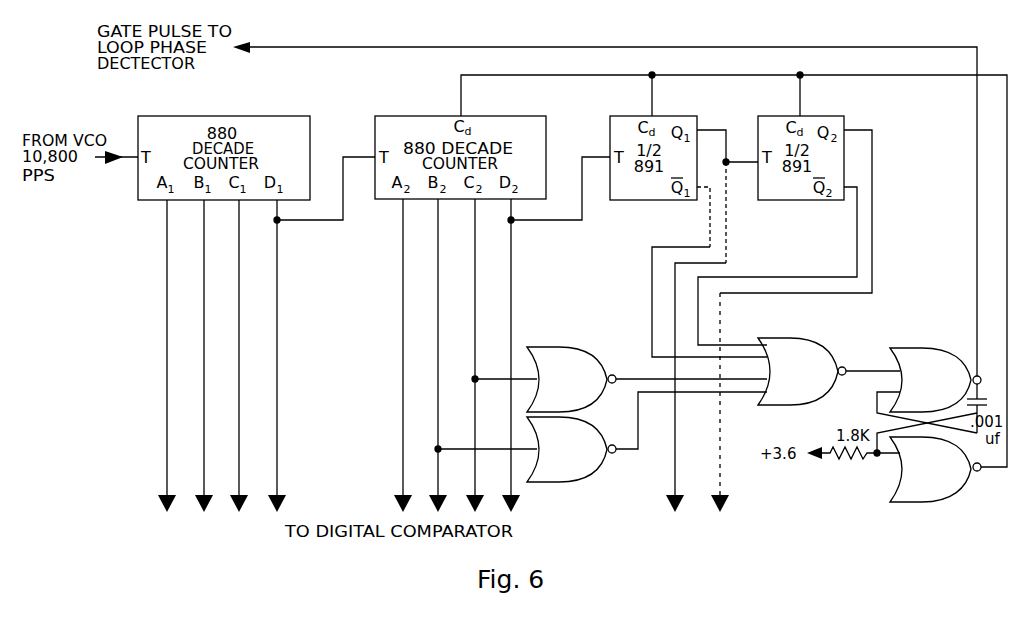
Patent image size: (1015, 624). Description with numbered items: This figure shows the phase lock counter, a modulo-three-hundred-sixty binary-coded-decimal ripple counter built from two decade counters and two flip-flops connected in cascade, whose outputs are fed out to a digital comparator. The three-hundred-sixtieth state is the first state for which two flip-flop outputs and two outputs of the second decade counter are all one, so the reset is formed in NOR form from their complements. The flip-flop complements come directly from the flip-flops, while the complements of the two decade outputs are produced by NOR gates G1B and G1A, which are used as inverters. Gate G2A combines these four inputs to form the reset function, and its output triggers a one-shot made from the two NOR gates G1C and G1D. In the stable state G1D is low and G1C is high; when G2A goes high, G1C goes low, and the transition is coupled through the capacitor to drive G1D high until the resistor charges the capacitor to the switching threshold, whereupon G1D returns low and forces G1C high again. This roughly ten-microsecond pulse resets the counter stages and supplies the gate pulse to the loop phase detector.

The NOR gate G1A is at (571, 370).
The NOR gate G1B is at (571, 460).
The NOR gate G1C is at (935, 370).
The NOR gate G1D is at (935, 482).
The NOR gate G2A is at (829, 381).